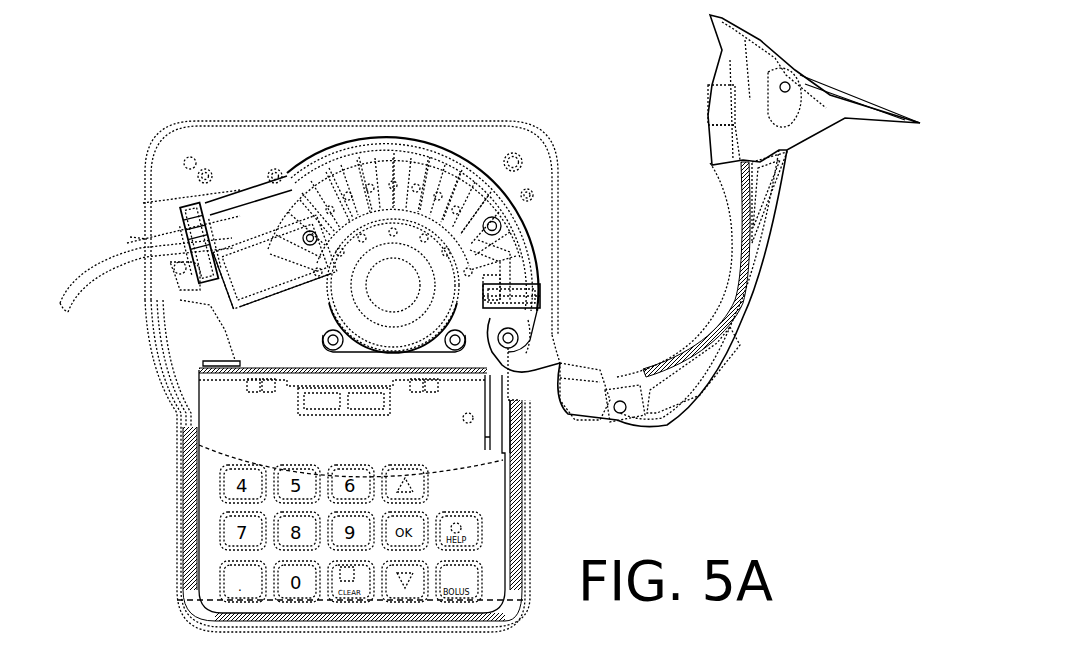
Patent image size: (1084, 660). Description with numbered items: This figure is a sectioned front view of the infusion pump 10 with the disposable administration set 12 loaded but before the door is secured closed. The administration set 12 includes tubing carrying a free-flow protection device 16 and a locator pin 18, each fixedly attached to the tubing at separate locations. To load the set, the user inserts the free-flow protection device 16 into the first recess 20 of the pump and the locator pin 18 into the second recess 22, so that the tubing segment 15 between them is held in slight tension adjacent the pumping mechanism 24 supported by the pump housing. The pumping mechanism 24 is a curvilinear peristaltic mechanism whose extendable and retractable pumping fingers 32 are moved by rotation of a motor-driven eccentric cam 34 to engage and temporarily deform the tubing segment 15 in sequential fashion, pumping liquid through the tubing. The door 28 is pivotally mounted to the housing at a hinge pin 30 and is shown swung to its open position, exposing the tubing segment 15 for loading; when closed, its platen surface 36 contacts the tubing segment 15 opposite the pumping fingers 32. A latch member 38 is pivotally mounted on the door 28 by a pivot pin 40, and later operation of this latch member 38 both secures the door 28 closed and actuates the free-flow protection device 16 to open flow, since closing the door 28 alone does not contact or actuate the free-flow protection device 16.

The infusion pump 10 is at (292, 74).
The administration set 12 is at (558, 358).
The tubing segment 15 is at (402, 145).
The free-flow protection device 16 is at (190, 210).
The locator pin 18 is at (528, 292).
The first recess 20 is at (197, 277).
The second recess 22 is at (497, 292).
The pumping mechanism 24 is at (378, 211).
The door 28 is at (703, 288).
The hinge pin 30 is at (510, 350).
The pumping fingers 32 is at (392, 157).
The eccentric cam 34 is at (410, 293).
The platen surface 36 is at (730, 240).
The latch member 38 is at (814, 95).
The pivot pin 40 is at (792, 86).